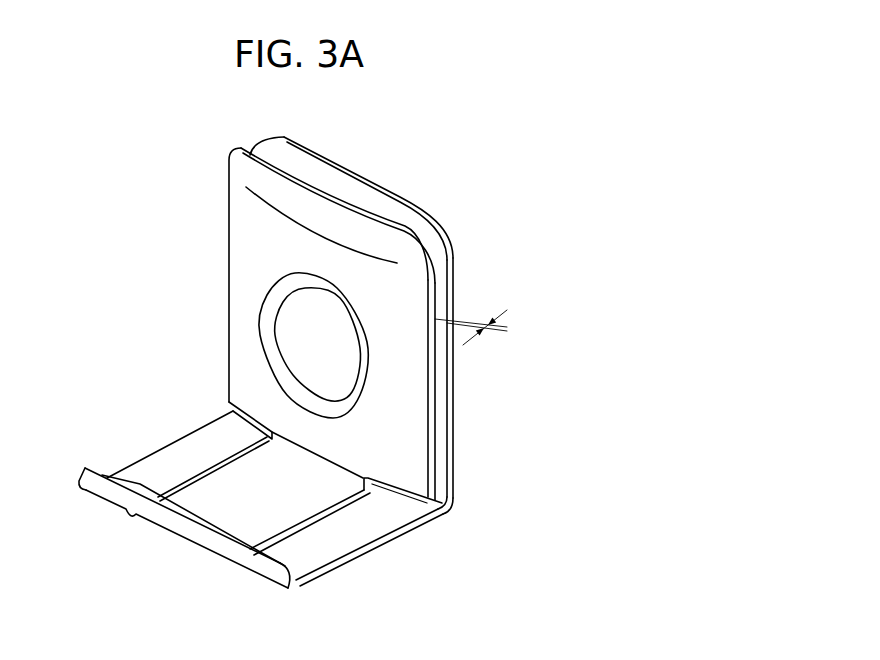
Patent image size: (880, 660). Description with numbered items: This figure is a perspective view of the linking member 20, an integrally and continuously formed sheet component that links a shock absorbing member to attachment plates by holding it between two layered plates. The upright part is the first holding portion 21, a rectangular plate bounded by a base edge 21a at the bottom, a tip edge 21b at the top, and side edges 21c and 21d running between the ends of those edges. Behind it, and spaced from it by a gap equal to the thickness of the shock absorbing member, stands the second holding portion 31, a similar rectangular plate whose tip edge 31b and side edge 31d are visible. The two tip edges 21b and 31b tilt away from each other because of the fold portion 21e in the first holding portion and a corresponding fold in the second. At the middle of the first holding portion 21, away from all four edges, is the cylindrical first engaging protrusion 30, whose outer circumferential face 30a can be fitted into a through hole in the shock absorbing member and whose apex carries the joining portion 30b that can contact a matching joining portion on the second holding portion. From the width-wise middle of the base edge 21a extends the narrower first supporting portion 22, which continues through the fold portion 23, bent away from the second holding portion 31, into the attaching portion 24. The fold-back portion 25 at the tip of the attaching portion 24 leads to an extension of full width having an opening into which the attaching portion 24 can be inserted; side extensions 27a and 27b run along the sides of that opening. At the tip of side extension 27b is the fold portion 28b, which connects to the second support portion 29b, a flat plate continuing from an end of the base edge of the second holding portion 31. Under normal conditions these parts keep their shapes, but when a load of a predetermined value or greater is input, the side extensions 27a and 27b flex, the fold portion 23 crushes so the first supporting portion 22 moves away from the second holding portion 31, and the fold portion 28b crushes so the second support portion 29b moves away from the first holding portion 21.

The linking member 20 is at (436, 119).
The first holding portion 21 is at (242, 282).
The base edge 21a is at (393, 497).
The tip edge 21b is at (362, 212).
The side edge 21c is at (229, 247).
The side edge 21d is at (437, 395).
The fold portion 21e is at (273, 211).
The first supporting portion 22 is at (235, 412).
The fold portion 23 is at (210, 488).
The attaching portion 24 is at (145, 475).
The fold-back portion 25 is at (177, 523).
The side extension 27a is at (120, 482).
The side extension 27b is at (315, 547).
The fold portion 28b is at (447, 515).
The second support portion 29b is at (440, 477).
The first engaging protrusion 30 is at (167, 308).
The outer circumferential face 30a is at (270, 328).
The joining portion 30b is at (292, 353).
The second holding portion 31 is at (433, 235).
The tip edge 31b is at (327, 160).
The side edge 31d is at (453, 283).